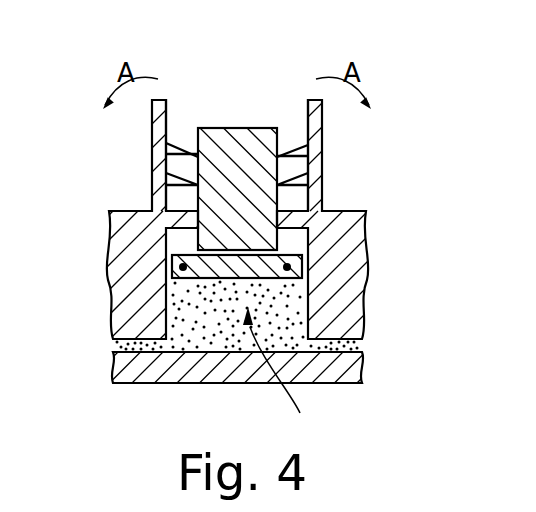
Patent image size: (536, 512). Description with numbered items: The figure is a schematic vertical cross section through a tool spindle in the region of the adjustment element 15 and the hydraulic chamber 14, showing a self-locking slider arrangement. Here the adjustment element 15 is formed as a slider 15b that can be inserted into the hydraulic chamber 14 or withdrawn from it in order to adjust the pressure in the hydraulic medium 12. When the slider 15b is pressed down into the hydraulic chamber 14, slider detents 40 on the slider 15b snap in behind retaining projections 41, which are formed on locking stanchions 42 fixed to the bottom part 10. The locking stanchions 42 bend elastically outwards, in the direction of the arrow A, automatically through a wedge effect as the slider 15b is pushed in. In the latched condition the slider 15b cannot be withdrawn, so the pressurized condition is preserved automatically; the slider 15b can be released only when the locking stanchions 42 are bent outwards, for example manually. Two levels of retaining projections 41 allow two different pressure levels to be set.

The bottom part 10 is at (132, 232).
The hydraulic medium 12 is at (206, 333).
The hydraulic chamber 14 is at (278, 374).
The adjustment element 15 is at (243, 97).
The slider 15b is at (222, 148).
The slider detents 40 is at (313, 177).
The retaining projections 41 is at (305, 150).
The locking stanchions 42 is at (313, 120).